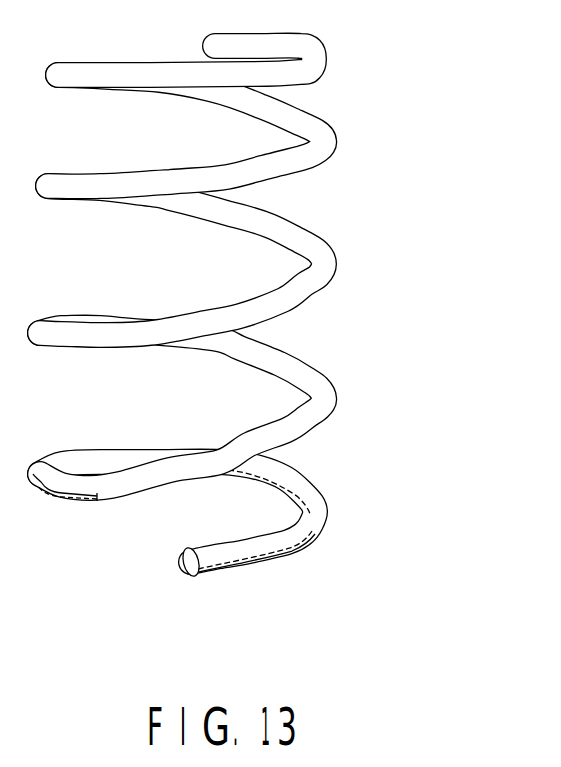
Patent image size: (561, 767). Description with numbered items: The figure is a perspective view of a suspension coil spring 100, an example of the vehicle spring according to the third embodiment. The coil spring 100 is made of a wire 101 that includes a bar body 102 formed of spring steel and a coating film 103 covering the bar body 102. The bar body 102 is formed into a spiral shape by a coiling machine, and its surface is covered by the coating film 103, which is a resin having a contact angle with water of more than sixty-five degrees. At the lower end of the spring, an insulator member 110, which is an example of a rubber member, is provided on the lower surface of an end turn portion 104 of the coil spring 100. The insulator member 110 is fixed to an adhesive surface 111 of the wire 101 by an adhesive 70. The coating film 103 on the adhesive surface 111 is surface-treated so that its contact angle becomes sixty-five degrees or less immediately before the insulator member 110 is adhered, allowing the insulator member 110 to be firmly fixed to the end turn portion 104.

The suspension coil spring 100 is at (273, 352).
The wire 101 is at (239, 255).
The bar body 102 is at (306, 307).
The coating film 103 is at (239, 264).
The end turn portion 104 is at (238, 560).
The insulator member 110 is at (290, 564).
The adhesive 70 is at (295, 555).
The adhesive surface 111 is at (199, 568).